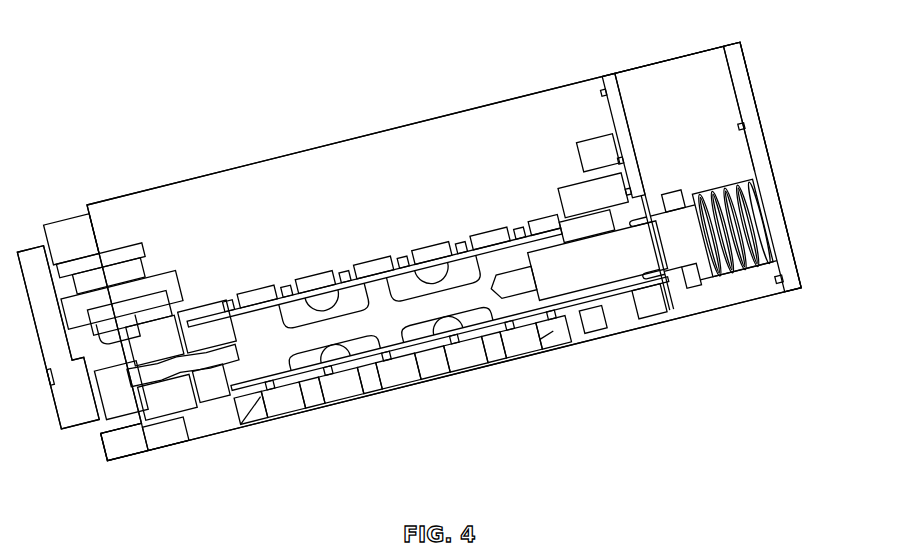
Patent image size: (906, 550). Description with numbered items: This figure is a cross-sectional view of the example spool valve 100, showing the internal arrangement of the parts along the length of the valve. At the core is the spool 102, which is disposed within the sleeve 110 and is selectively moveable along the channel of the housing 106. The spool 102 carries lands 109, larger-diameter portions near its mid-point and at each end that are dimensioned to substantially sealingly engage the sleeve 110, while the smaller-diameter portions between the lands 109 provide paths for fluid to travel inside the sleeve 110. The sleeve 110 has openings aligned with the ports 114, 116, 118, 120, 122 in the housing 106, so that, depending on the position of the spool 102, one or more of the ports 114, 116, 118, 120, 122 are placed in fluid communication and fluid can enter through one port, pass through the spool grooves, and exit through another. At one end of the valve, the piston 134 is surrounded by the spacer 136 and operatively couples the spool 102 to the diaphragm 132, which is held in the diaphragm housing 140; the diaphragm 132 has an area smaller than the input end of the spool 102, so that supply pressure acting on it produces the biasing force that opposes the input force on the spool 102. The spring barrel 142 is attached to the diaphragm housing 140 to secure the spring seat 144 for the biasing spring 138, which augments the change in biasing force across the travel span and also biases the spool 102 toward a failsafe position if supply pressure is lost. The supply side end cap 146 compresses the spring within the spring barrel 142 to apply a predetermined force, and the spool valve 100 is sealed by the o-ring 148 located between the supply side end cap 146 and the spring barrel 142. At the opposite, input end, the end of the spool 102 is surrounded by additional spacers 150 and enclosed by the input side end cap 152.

The spool valve 100 is at (113, 130).
The spool 102 is at (238, 387).
The housing 106 is at (131, 203).
The lands 109 is at (275, 295).
The sleeve 110 is at (255, 386).
The port 114 is at (291, 427).
The port 116 is at (349, 411).
The port 118 is at (406, 403).
The port 120 is at (464, 386).
The port 122 is at (523, 371).
The diaphragm 132 is at (655, 284).
The piston 134 is at (590, 278).
The spacer 136 is at (613, 298).
The biasing spring 138 is at (728, 192).
The diaphragm housing 140 is at (617, 120).
The spring barrel 142 is at (664, 70).
The spring seat 144 is at (680, 262).
The supply side end cap 146 is at (746, 84).
The o-ring 148 is at (785, 280).
The additional spacers 150 is at (190, 407).
The input side end cap 152 is at (67, 415).